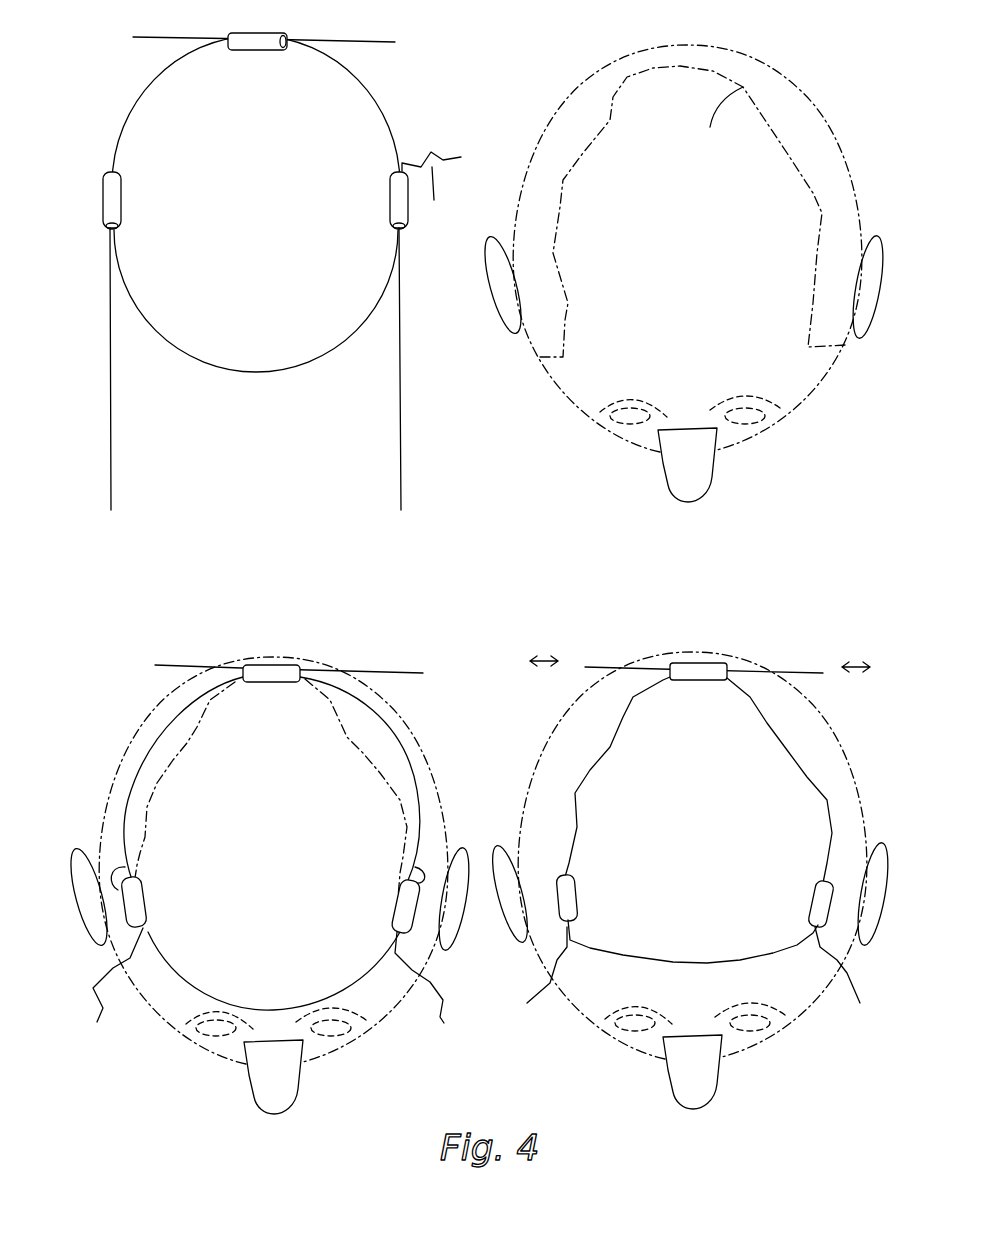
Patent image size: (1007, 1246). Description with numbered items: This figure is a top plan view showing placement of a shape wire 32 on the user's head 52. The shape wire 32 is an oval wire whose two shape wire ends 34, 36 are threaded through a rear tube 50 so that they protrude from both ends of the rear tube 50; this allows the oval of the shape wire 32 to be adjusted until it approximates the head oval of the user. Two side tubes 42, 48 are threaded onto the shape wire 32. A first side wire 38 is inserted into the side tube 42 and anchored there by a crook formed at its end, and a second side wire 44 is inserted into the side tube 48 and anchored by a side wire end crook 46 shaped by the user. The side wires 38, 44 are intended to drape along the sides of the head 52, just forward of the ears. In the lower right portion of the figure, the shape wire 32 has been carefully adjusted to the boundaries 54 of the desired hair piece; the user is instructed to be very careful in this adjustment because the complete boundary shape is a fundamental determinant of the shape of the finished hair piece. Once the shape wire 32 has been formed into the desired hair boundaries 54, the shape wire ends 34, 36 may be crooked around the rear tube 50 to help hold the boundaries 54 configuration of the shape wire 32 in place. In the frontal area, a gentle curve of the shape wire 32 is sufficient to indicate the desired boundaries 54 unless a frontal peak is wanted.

The shape wire 32 is at (253, 373).
The shape wire end 34 is at (134, 38).
The shape wire end 36 is at (383, 44).
The side wire 38 is at (110, 462).
The side tube 42 is at (122, 199).
The side wire 44 is at (398, 458).
The side wire end crook 46 is at (448, 171).
The side tube 48 is at (389, 201).
The rear tube 50 is at (255, 50).
The head 52 is at (737, 87).
The boundaries 54 is at (657, 948).